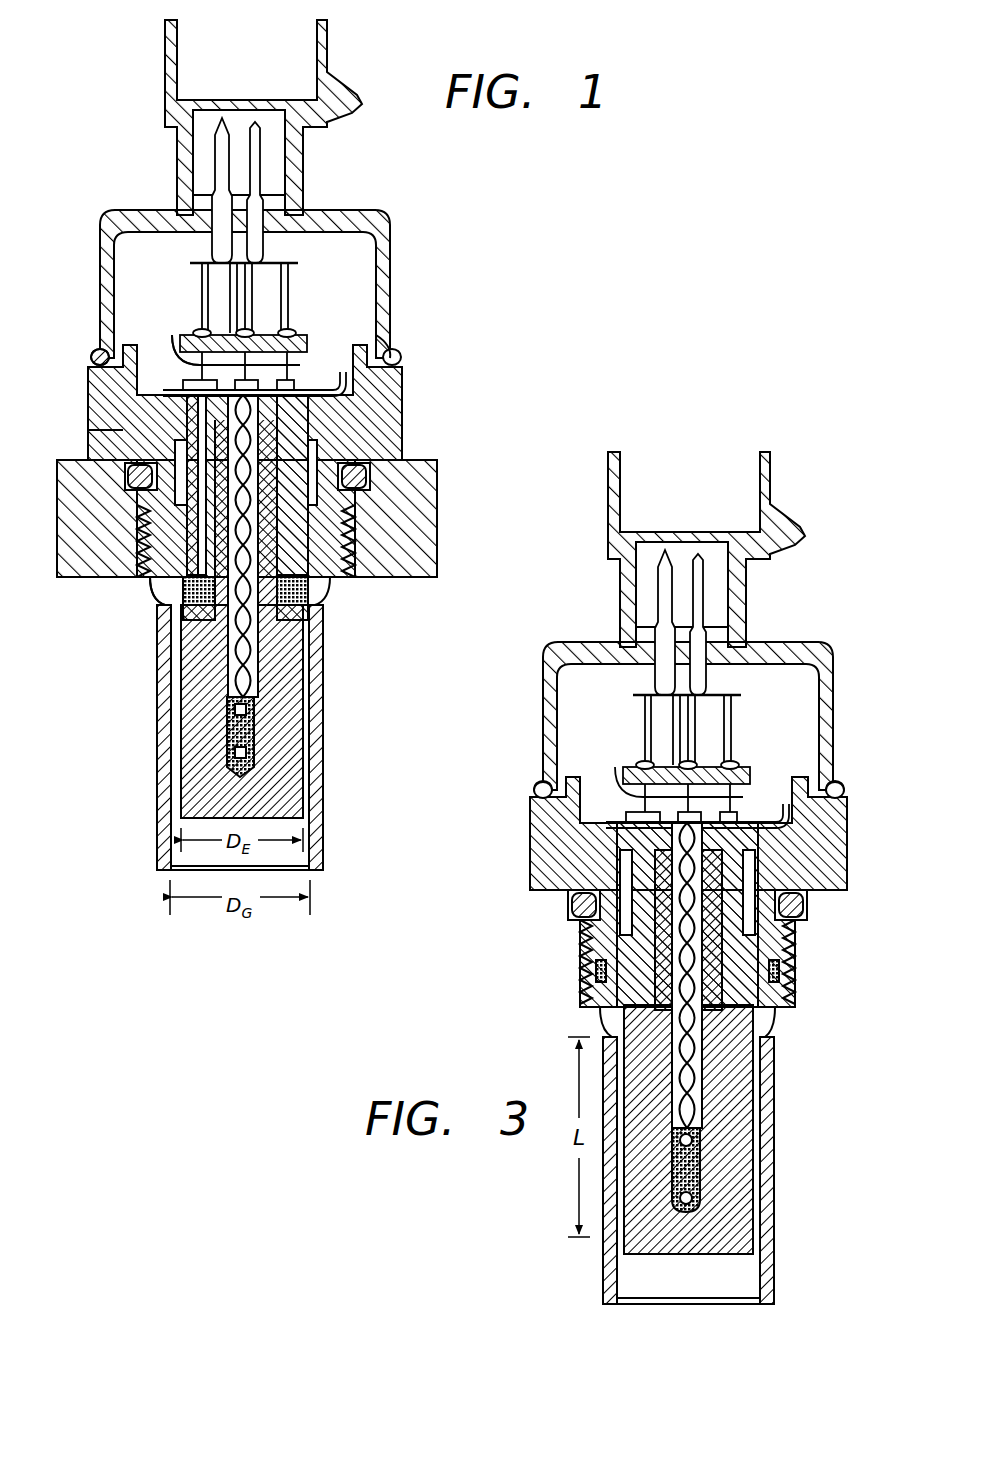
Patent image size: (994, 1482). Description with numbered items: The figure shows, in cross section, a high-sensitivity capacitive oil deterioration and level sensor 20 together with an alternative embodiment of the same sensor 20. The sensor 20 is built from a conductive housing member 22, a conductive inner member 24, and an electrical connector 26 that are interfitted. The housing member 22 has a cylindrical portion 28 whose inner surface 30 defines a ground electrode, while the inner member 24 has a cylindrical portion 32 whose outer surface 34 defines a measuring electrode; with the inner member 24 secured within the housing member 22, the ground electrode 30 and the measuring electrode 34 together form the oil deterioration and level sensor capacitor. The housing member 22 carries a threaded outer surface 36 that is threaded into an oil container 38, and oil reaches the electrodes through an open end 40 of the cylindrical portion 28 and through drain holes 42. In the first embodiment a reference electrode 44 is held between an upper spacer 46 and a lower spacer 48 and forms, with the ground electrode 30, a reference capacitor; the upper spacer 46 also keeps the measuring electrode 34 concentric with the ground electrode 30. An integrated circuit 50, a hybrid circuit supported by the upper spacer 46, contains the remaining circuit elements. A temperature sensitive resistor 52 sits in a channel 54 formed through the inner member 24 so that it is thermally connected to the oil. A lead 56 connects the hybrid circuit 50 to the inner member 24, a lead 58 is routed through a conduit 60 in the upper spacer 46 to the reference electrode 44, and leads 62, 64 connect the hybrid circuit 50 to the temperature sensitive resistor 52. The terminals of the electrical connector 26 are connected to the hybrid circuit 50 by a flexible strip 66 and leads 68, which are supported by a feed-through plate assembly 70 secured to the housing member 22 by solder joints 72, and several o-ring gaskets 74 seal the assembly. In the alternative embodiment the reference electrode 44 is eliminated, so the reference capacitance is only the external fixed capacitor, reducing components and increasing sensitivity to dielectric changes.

In FIG. 1, the high-sensitivity capacitive oil deterioration and level sensor 20 is at (150, 185).
In FIG. 1, the conductive housing member 22 is at (92, 398).
In FIG. 1, the conductive inner member 24 is at (312, 665).
In FIG. 3, the conductive inner member 24 is at (760, 1165).
In FIG. 1, the electrical connector 26 is at (327, 52).
In FIG. 1, the cylindrical portion 28 is at (160, 713).
In FIG. 1, the inner surface 30 is at (180, 778).
In FIG. 1, the cylindrical portion 32 is at (300, 765).
In FIG. 1, the outer surface 34 is at (302, 818).
In FIG. 1, the threaded outer surface 36 is at (80, 503).
In FIG. 1, the oil container 38 is at (78, 572).
In FIG. 1, the open end 40 is at (287, 942).
In FIG. 1, the drain holes 42 is at (160, 595).
In FIG. 1, the reference electrode 44 is at (318, 592).
In FIG. 1, the upper spacer 46 is at (392, 350).
In FIG. 3, the upper spacer 46 is at (830, 762).
In FIG. 1, the lower spacer 48 is at (310, 612).
In FIG. 1, the integrated circuit 50 is at (300, 388).
In FIG. 3, the integrated circuit 50 is at (740, 820).
In FIG. 1, the temperature sensitive resistor 52 is at (265, 733).
In FIG. 3, the temperature sensitive resistor 52 is at (705, 1190).
In FIG. 1, the channel 54 is at (195, 668).
In FIG. 1, the lead 56 is at (385, 392).
In FIG. 1, the lead 58 is at (95, 352).
In FIG. 1, the conduit 60 is at (120, 432).
In FIG. 1, the lead 62 is at (340, 440).
In FIG. 3, the lead 62 is at (730, 1040).
In FIG. 1, the lead 64 is at (320, 470).
In FIG. 3, the lead 64 is at (705, 1065).
In FIG. 1, the flexible strip 66 is at (298, 262).
In FIG. 3, the flexible strip 66 is at (736, 692).
In FIG. 1, the leads 68 is at (174, 338).
In FIG. 1, the feed-through plate assembly 70 is at (280, 333).
In FIG. 3, the feed-through plate assembly 70 is at (732, 766).
In FIG. 1, the solder joints 72 is at (392, 322).
In FIG. 1, the o-ring gaskets 74 is at (330, 500).
In FIG. 3, the o-ring gaskets 74 is at (843, 792).